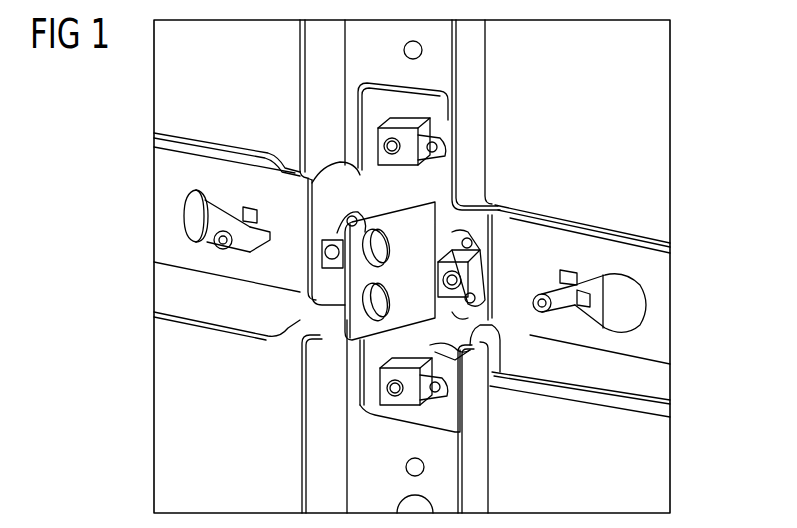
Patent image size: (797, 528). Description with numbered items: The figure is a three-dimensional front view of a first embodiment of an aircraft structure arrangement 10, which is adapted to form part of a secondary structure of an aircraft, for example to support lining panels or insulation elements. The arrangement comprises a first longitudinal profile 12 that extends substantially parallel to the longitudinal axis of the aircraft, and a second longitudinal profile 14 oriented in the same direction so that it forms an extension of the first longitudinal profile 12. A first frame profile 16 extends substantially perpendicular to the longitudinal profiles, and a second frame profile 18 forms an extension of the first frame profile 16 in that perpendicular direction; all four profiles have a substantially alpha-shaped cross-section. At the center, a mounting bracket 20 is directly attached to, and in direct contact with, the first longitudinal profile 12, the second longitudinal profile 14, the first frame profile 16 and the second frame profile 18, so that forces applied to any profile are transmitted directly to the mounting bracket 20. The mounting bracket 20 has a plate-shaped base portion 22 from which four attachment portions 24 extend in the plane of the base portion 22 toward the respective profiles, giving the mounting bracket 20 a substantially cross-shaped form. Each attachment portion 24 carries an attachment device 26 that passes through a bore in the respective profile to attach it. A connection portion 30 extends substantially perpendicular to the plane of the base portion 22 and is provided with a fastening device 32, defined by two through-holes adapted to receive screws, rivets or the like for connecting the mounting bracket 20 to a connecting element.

The aircraft structure arrangement 10 is at (712, 66).
The first longitudinal profile 12 is at (208, 140).
The second longitudinal profile 14 is at (615, 222).
The first frame profile 16 is at (476, 52).
The second frame profile 18 is at (472, 478).
The mounting bracket 20 is at (508, 186).
The base portion 22 is at (468, 347).
The attachment portion 24 is at (384, 98).
The attachment device 26 is at (405, 125).
The connection portion 30 is at (395, 233).
The fastening device 32 is at (380, 308).